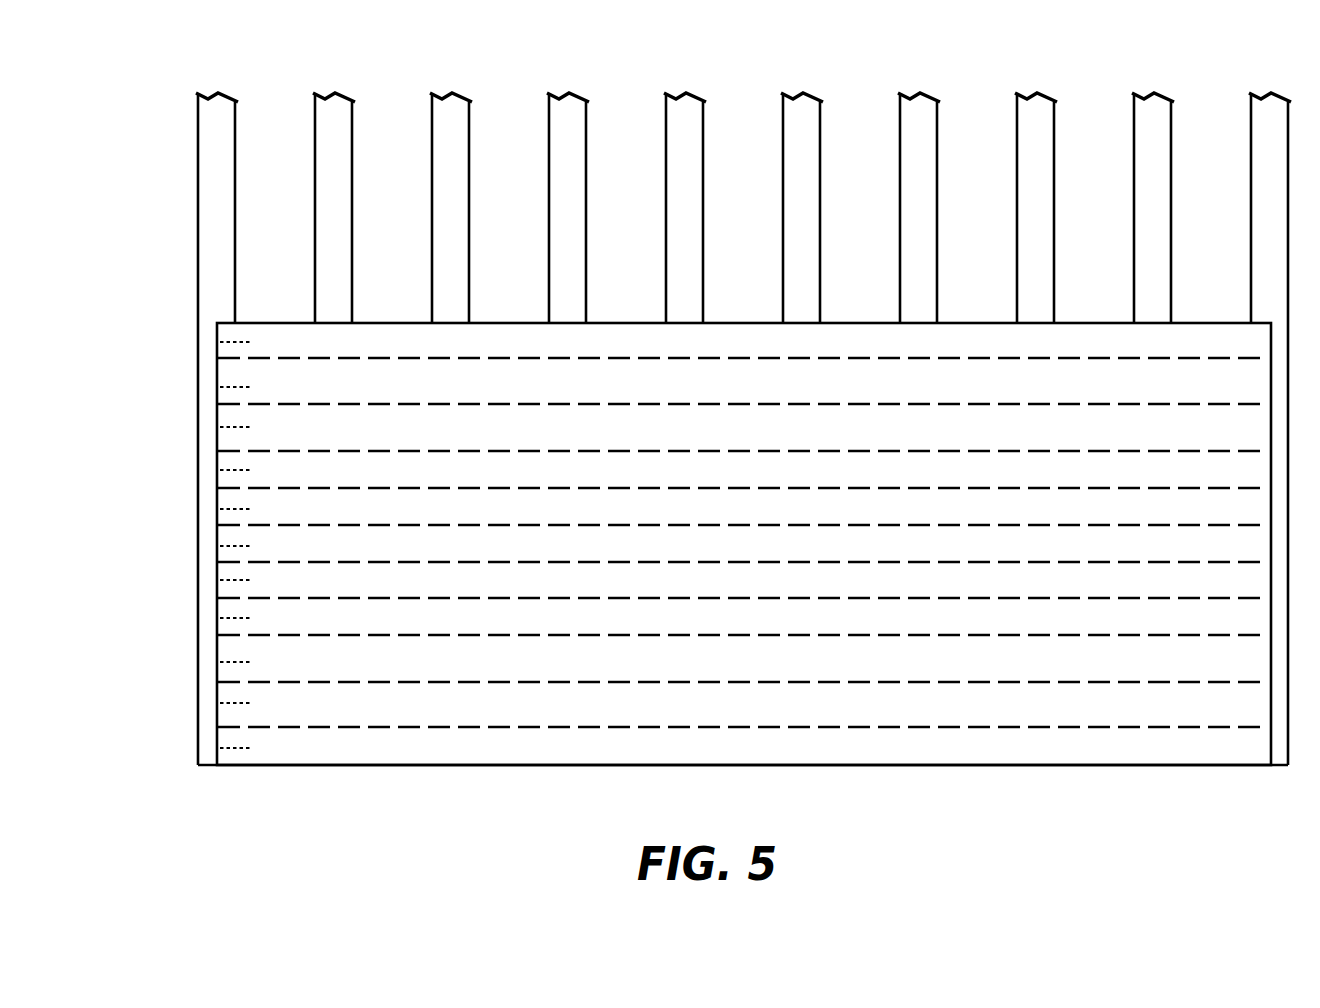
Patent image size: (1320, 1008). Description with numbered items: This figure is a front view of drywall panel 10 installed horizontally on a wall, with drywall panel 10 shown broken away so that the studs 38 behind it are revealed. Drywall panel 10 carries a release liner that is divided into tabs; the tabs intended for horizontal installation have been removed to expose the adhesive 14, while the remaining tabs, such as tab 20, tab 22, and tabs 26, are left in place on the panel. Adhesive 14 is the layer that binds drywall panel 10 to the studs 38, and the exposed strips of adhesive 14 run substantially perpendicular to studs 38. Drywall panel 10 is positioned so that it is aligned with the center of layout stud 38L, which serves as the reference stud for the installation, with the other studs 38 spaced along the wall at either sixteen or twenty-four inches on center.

The drywall panel 10 is at (415, 778).
The adhesive 14 is at (218, 342).
The tab 20 is at (218, 470).
The tab 22 is at (218, 546).
The tab 26 is at (218, 387).
The studs 38 is at (718, 157).
The layout stud 38L is at (186, 162).